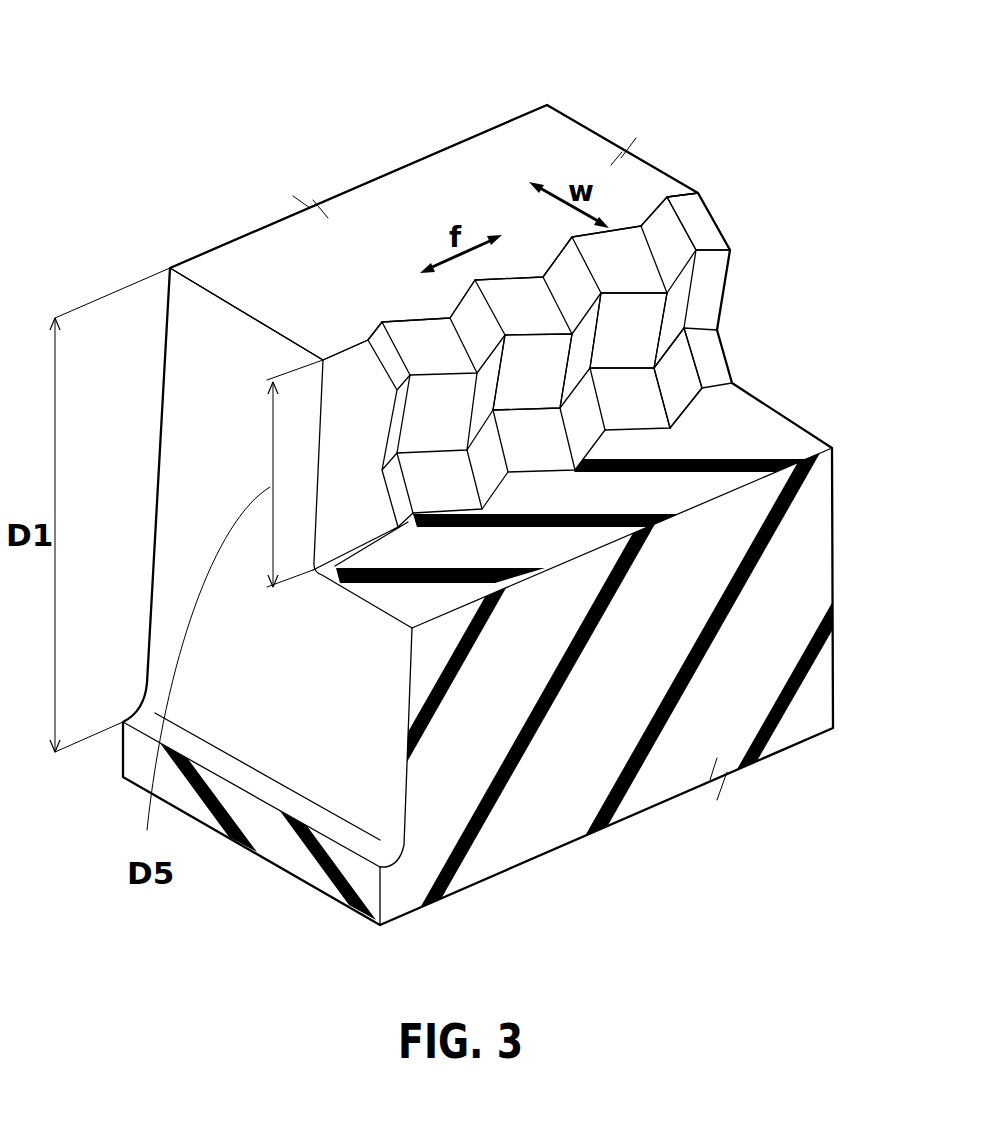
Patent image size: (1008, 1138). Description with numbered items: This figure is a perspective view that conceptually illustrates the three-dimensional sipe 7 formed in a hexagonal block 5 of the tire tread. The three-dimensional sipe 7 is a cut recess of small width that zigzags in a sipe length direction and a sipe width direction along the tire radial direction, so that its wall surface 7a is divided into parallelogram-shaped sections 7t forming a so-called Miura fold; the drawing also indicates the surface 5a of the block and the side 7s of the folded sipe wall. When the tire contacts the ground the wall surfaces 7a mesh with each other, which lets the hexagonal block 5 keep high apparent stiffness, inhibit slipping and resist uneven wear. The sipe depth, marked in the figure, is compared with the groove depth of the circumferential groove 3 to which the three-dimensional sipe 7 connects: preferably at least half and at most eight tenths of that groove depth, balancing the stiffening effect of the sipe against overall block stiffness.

The circumferential groove 3 is at (230, 330).
The hexagonal block 5 is at (488, 108).
The upper surface of base body 5a is at (395, 212).
The three-dimensional sipe 7 is at (647, 213).
The wall surface 7a is at (700, 222).
The side surface of serration 7s is at (732, 382).
The parallelogram-shaped section 7t is at (640, 398).